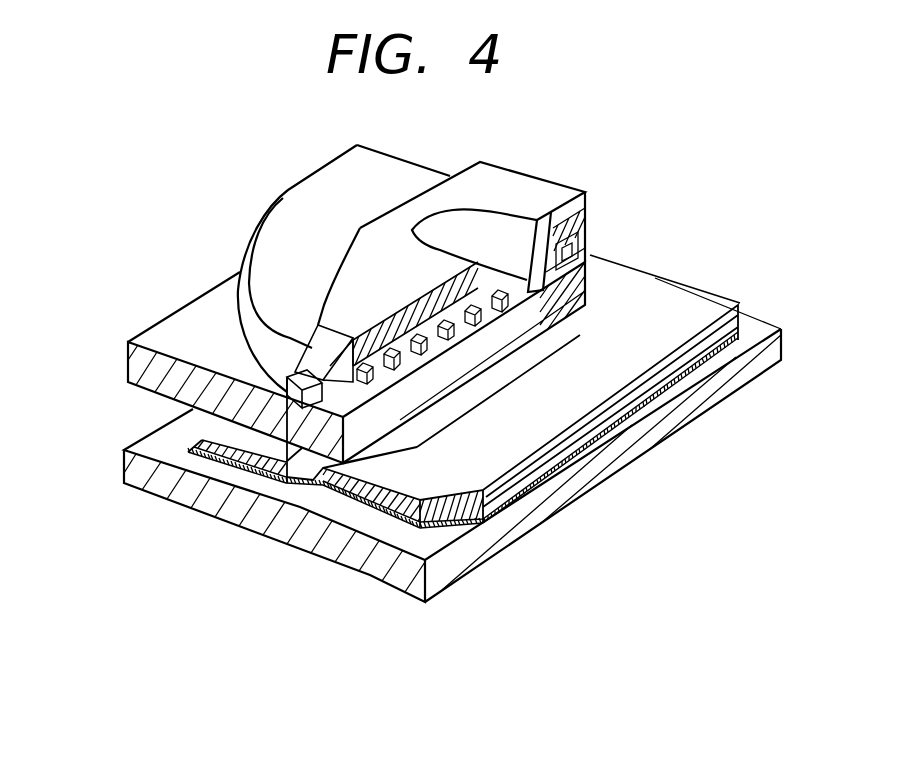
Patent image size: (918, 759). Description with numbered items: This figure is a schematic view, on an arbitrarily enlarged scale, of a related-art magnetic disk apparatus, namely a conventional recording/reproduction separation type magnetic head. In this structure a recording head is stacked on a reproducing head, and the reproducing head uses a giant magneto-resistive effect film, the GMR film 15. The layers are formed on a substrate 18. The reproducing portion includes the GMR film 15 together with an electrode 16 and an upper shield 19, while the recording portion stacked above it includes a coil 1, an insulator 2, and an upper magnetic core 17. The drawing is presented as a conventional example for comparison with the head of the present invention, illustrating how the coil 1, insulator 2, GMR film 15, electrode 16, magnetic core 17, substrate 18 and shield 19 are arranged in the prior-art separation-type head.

The coil 1 is at (490, 330).
The insulator 2 is at (290, 202).
The GMR film 15 is at (267, 500).
The electrode 16 is at (342, 530).
The magnetic core (upper) 17 is at (543, 192).
The substrate 18 is at (505, 540).
The shield (upper) 19 is at (127, 357).